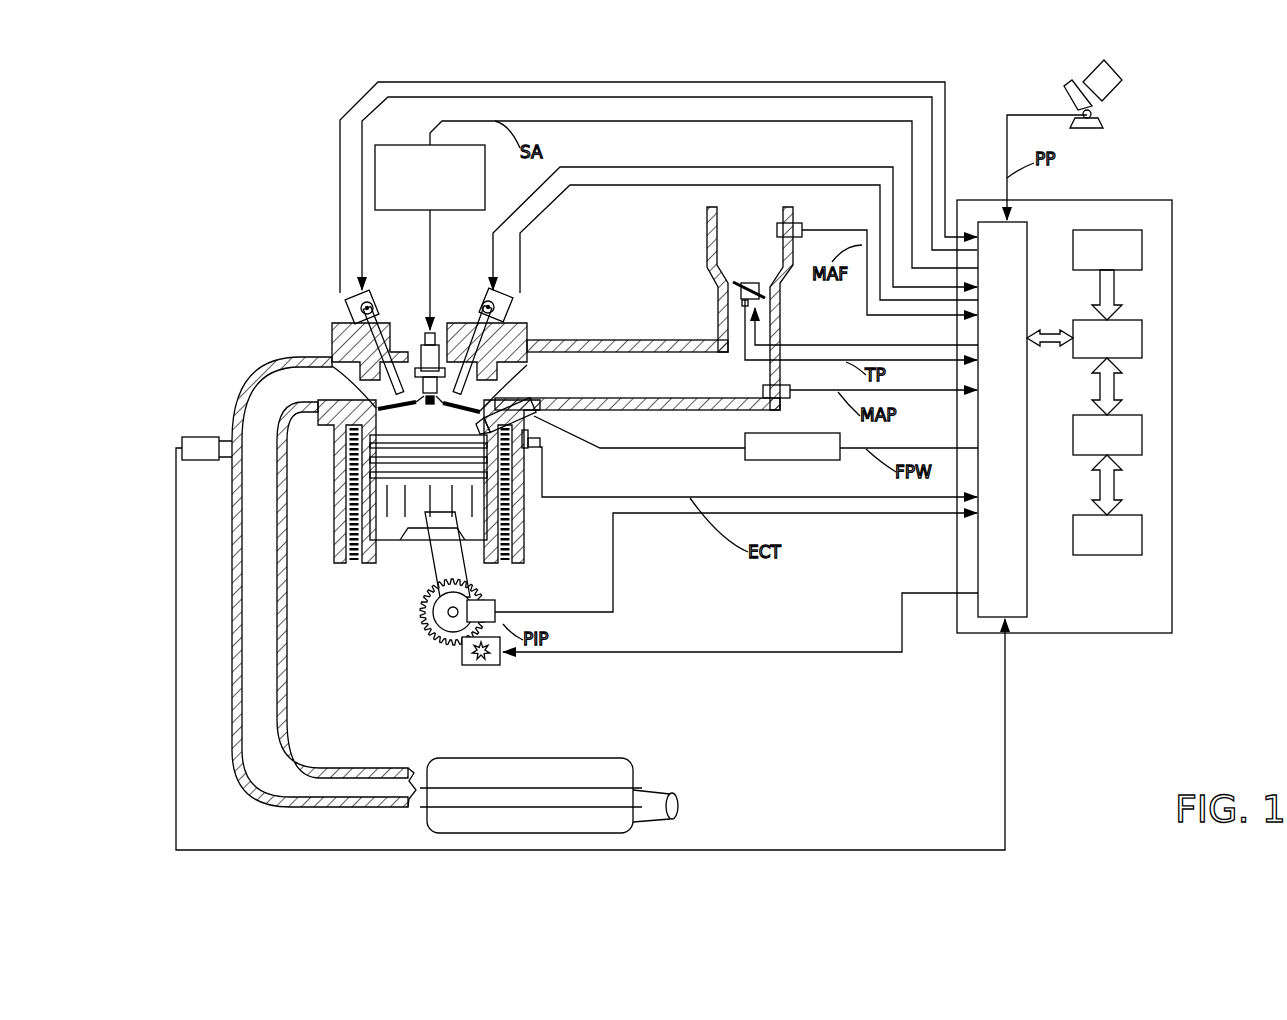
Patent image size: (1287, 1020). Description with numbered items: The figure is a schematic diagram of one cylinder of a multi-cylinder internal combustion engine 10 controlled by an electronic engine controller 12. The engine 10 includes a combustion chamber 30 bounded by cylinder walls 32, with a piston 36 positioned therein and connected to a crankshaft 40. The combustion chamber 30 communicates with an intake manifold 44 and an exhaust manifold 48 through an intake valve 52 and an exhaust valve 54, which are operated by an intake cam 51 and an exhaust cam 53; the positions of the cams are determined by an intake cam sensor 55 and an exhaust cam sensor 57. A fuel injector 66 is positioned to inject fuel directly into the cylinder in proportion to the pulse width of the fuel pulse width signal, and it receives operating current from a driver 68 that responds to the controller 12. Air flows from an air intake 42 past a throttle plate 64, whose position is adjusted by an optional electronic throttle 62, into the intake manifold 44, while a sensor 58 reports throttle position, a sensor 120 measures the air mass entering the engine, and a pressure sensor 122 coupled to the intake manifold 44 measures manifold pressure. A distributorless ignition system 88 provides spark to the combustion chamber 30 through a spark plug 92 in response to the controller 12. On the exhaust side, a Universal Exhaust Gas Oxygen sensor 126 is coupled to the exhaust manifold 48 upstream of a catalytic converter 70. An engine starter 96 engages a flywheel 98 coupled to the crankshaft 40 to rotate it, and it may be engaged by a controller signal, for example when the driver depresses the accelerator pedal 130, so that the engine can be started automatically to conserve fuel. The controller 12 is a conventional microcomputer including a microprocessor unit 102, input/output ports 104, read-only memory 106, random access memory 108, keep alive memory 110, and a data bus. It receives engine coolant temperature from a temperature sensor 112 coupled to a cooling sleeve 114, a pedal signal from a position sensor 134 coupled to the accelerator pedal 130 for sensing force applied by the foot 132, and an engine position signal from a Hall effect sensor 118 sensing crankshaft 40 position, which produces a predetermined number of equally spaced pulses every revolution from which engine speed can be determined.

The internal combustion engine 10 is at (268, 278).
The electronic engine controller 12 is at (1168, 200).
The combustion chamber 30 is at (346, 520).
The cylinder walls 32 is at (362, 572).
The piston 36 is at (412, 534).
The crankshaft 40 is at (440, 612).
The air intake 42 is at (764, 256).
The intake manifold 44 is at (702, 389).
The exhaust manifold 48 is at (318, 393).
The intake cam 51 is at (482, 296).
The intake valve 52 is at (480, 387).
The exhaust cam 53 is at (376, 296).
The exhaust valve 54 is at (338, 358).
The intake cam sensor 55 is at (506, 312).
The exhaust cam sensor 57 is at (348, 305).
The throttle position sensor 58 is at (730, 310).
The electronic throttle 62 is at (768, 290).
The throttle plate 64 is at (732, 290).
The fuel injector 66 is at (520, 422).
The driver 68 is at (768, 460).
The catalytic converter 70 is at (445, 760).
The distributorless ignition system 88 is at (390, 145).
The spark plug 92 is at (438, 332).
The engine starter 96 is at (495, 665).
The flywheel 98 is at (447, 650).
The microprocessor unit 102 is at (1142, 342).
The input/output ports 104 is at (1027, 232).
The read-only memory 106 is at (1142, 252).
The random access memory 108 is at (1142, 432).
The keep alive memory 110 is at (1142, 532).
The temperature sensor 112 is at (532, 448).
The cooling sleeve 114 is at (510, 514).
The Hall effect sensor 118 is at (496, 601).
The air mass sensor 120 is at (797, 222).
The pressure sensor 122 is at (788, 398).
The Universal Exhaust Gas Oxygen sensor 126 is at (182, 440).
The accelerator pedal 130 is at (1068, 90).
The foot 132 is at (1118, 78).
The position sensor 134 is at (1105, 115).